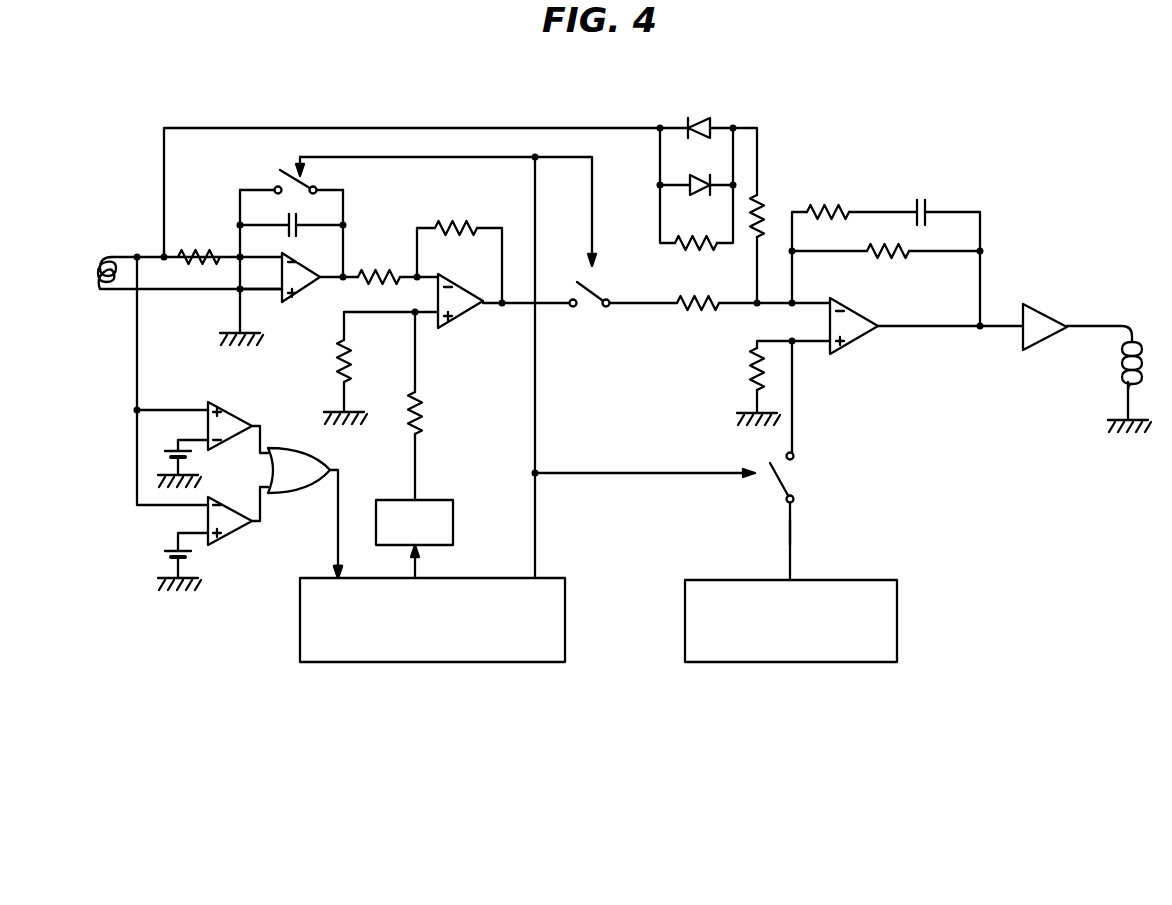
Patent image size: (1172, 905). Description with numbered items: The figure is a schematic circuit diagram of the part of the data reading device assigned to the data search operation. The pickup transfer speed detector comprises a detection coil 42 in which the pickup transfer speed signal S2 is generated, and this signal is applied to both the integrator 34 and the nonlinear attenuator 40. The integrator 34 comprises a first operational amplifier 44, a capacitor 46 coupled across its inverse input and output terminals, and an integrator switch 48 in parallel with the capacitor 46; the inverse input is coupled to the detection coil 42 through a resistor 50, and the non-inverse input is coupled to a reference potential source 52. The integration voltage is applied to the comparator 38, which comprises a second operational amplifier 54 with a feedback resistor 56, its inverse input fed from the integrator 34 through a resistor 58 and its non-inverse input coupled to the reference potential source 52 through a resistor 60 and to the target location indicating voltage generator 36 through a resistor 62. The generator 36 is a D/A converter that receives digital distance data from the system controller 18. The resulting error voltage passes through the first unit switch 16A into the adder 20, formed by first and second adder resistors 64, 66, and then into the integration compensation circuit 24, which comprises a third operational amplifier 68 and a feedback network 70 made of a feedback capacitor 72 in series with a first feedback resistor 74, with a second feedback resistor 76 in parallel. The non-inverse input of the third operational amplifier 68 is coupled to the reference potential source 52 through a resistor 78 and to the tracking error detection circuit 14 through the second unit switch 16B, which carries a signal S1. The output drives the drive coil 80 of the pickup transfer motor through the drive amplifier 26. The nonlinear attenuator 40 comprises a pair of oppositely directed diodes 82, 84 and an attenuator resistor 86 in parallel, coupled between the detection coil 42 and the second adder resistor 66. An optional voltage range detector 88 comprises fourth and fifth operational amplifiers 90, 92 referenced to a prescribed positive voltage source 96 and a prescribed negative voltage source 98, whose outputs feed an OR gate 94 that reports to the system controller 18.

The tracking error detection circuit 14 is at (906, 615).
The first unit switch 16A is at (590, 310).
The second unit switch 16B is at (796, 470).
The system controller 18 is at (566, 617).
The adder 20 is at (725, 311).
The integration compensation circuit 24 is at (917, 343).
The drive amplifier 26 is at (1040, 305).
The integrator 34 is at (355, 215).
The target location indicating voltage generator 36 is at (454, 520).
The comparator 38 is at (455, 325).
The nonlinear attenuator 40 is at (745, 163).
The detection coil 42 is at (110, 262).
The first operational amplifier 44 is at (300, 292).
The capacitor 46 is at (298, 232).
The integrator switch 48 is at (304, 168).
The resistor 50 is at (198, 255).
The reference potential source 52 is at (252, 338).
The second operational amplifier 54 is at (465, 285).
The feedback resistor 56 is at (462, 225).
The resistor 58 is at (388, 270).
The resistor 60 is at (354, 375).
The resistor 62 is at (424, 400).
The first adder resistor 64 is at (690, 318).
The second adder resistor 66 is at (765, 205).
The third operational amplifier 68 is at (855, 345).
The feedback network 70 is at (972, 235).
The feedback capacitor 72 is at (930, 200).
The first feedback resistor 74 is at (838, 205).
The second feedback resistor 76 is at (895, 258).
The resistor 78 is at (745, 375).
The drive coil 80 is at (1118, 365).
The diode 82 is at (698, 138).
The diode 84 is at (696, 195).
The attenuator resistor 86 is at (700, 252).
The voltage range detector 88 is at (218, 575).
The fourth operational amplifier 90 is at (232, 410).
The fifth operational amplifier 92 is at (222, 546).
The OR gate 94 is at (325, 470).
The prescribed positive voltage source 96 is at (190, 455).
The prescribed negative voltage source 98 is at (168, 555).
The switch S1 is at (796, 530).
The pickup transfer speed signal S2 is at (150, 255).